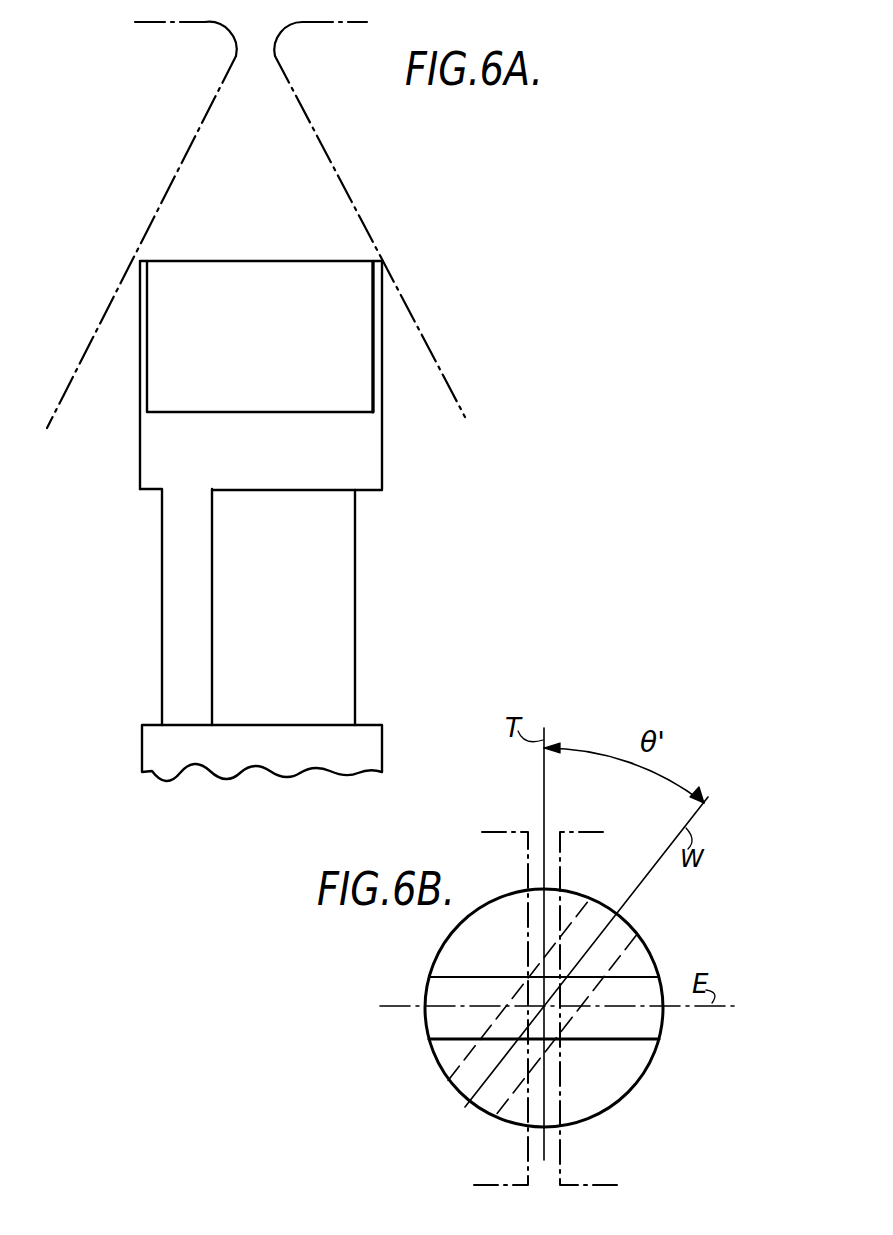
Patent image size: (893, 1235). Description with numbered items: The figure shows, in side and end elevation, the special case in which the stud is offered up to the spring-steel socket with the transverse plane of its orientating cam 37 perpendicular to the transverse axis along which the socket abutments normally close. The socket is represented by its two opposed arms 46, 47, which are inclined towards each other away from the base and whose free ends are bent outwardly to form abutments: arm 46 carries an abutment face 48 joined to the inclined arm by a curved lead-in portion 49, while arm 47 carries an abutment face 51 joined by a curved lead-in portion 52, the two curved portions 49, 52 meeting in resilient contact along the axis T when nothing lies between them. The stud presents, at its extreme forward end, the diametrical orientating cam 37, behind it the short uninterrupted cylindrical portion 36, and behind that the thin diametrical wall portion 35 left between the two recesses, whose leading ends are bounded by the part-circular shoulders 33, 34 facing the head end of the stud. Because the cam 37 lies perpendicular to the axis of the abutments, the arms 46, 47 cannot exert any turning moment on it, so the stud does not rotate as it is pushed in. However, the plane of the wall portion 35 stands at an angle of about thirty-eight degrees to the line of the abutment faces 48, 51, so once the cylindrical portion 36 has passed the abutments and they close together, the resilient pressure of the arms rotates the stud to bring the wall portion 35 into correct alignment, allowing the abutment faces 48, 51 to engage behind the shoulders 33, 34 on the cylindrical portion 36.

In FIG. 6A, the shoulder 33 is at (372, 493).
In FIG. 6A, the shoulder 34 is at (147, 493).
In FIG. 6A, the diametrical wall portion 35 is at (323, 618).
In FIG. 6B, the diametrical wall portion 35 is at (634, 916).
In FIG. 6A, the cylindrical portion 36 is at (383, 458).
In FIG. 6B, the cylindrical portion 36 is at (653, 960).
In FIG. 6A, the orientating cam 37 is at (262, 283).
In FIG. 6B, the orientating cam 37 is at (448, 993).
In FIG. 6A, the arm 46 is at (340, 182).
In FIG. 6A, the arm 47 is at (157, 216).
In FIG. 6A, the abutment face 48 is at (336, 16).
In FIG. 6B, the abutment face 48 is at (574, 851).
In FIG. 6A, the curved lead-in portion 49 is at (282, 50).
In FIG. 6A, the abutment face 51 is at (176, 16).
In FIG. 6B, the abutment face 51 is at (508, 836).
In FIG. 6A, the curved lead-in portion 52 is at (232, 44).